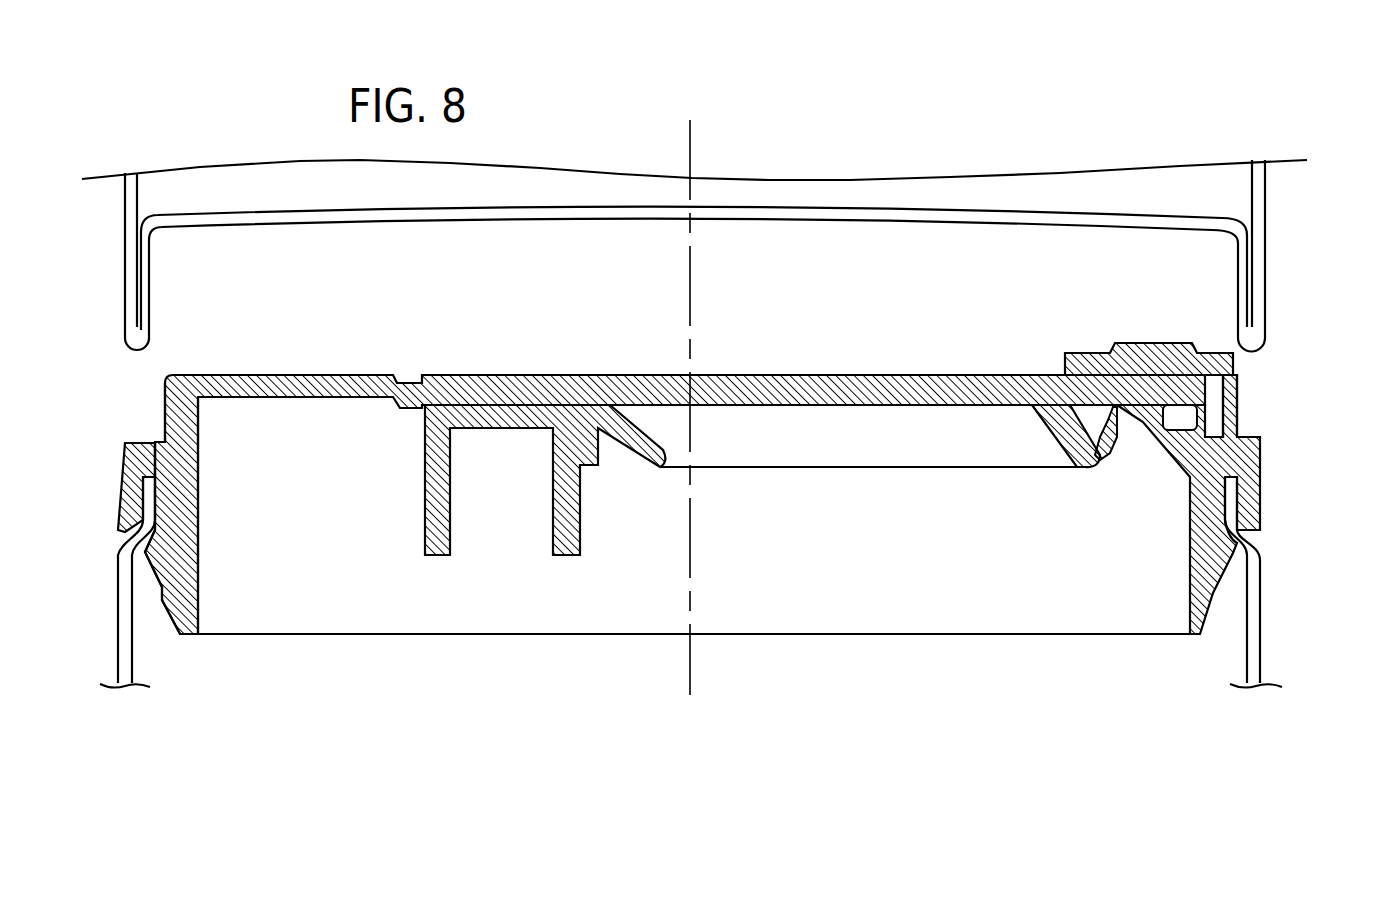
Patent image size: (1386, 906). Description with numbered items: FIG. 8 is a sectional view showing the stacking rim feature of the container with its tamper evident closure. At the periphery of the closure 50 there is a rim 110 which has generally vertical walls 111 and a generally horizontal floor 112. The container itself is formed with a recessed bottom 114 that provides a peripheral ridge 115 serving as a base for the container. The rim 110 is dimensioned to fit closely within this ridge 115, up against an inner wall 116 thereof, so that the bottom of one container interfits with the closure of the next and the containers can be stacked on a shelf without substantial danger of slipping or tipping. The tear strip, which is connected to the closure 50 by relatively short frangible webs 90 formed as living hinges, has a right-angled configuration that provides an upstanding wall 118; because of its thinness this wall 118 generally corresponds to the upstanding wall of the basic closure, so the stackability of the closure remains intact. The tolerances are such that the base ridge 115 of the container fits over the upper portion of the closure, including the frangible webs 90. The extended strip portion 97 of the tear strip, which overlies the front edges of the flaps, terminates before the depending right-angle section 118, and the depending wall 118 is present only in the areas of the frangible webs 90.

The closure 50 is at (165, 390).
The rim 110 is at (149, 371).
The vertical walls 111 is at (160, 415).
The horizontal floor 112 is at (143, 442).
The recessed bottom 114 is at (1147, 232).
The peripheral ridge 115 is at (1257, 337).
The inner wall 116 is at (1240, 283).
The extended strip portion 97 is at (1187, 343).
The upstanding wall 118 is at (1240, 375).
The frangible webs 90 is at (1253, 435).